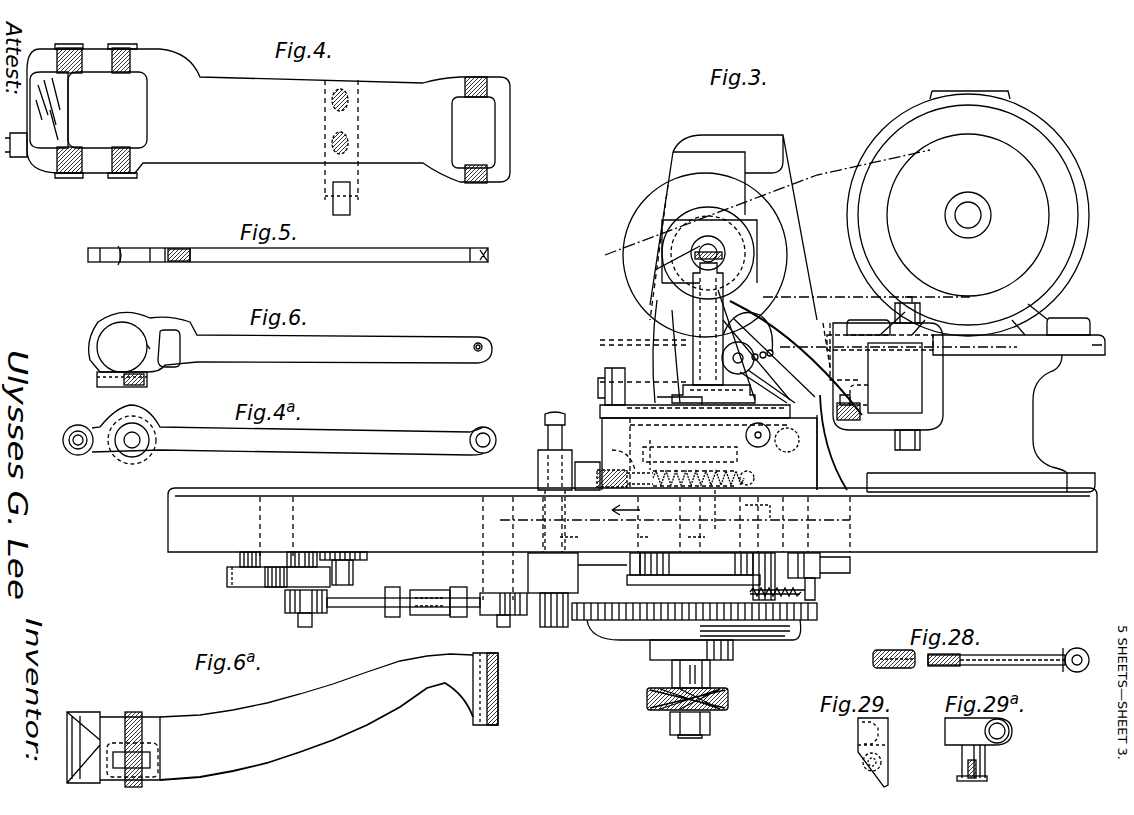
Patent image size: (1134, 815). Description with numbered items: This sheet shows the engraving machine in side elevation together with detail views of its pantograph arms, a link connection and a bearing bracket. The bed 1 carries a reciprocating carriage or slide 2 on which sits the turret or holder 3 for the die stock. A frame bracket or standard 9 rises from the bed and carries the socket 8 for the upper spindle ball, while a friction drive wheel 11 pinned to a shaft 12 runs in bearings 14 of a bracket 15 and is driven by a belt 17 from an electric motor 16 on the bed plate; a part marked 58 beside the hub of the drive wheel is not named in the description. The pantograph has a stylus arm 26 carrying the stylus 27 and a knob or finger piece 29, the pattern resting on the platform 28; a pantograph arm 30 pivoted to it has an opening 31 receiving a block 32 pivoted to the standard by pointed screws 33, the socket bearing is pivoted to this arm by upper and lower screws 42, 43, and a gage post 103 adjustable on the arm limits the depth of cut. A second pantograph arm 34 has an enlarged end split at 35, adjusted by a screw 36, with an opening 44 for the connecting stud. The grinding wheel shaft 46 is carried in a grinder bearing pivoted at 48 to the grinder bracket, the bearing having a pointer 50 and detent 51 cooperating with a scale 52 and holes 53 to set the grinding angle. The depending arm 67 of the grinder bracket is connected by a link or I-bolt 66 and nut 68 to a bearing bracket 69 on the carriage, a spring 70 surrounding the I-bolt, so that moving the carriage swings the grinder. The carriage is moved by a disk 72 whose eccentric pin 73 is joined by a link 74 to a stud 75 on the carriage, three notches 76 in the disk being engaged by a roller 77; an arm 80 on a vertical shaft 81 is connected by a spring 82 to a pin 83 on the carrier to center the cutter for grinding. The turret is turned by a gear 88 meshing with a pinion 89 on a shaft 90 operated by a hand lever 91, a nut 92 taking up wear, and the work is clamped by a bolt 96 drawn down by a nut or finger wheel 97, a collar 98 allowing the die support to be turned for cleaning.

In FIG. 3, the bed 1 is at (968, 540).
In FIG. 3, the carriage or slide 2 is at (583, 470).
In FIG. 3, the turret or holder 3 is at (651, 541).
In FIG. 3, the socket 8 is at (665, 195).
In FIG. 3, the frame bracket 9 is at (672, 165).
In FIG. 3, the friction drive wheel 11 is at (623, 256).
In FIG. 3, the shaft 12 is at (690, 240).
In FIG. 3, the bearings 14 is at (655, 270).
In FIG. 3, the bracket 15 is at (657, 326).
In FIG. 3, the electric motor 16 is at (1036, 135).
In FIG. 3, the belt 17 is at (815, 175).
In FIG. 4A, the stylus arm 26 is at (418, 438).
In FIG. 6A, the stylus arm 26 is at (282, 720).
In FIG. 3, the stylus arm 26 is at (790, 297).
In FIG. 3, the stylus 27 is at (696, 372).
In FIG. 3, the platform 28 is at (605, 420).
In FIG. 3, the knob or finger piece 29 is at (722, 256).
In FIG. 4, the pantograph arm 30 is at (268, 113).
In FIG. 3, the pantograph arm 30 is at (935, 390).
In FIG. 4, the opening 31 is at (76, 114).
In FIG. 3, the block 32 is at (640, 350).
In FIG. 3, the pointed screws 33 is at (604, 380).
In FIG. 5, the second pantograph arm 34 is at (288, 269).
In FIG. 6, the second pantograph arm 34 is at (385, 356).
In FIG. 5, the split 35 is at (119, 268).
In FIG. 6, the split 35 is at (122, 387).
In FIG. 5, the screw 36 is at (122, 247).
In FIG. 6, the screw 36 is at (97, 378).
In FIG. 4, the upper screw 42 is at (122, 68).
In FIG. 4, the lower screw 43 is at (132, 163).
In FIG. 6, the opening 44 is at (172, 342).
In FIG. 3, the shaft 46 is at (803, 455).
In FIG. 3, the pivot 48 is at (758, 448).
In FIG. 3, the pointer 50 is at (755, 337).
In FIG. 3, the detent 51 is at (757, 350).
In FIG. 3, the scale 52 is at (748, 300).
In FIG. 3, the holes 53 is at (767, 383).
In FIG. 3, the bearing 58 is at (724, 246).
In FIG. 28, the link or I-bolt 66 is at (1018, 664).
In FIG. 3, the link or I-bolt 66 is at (690, 488).
In FIG. 3, the depending arm 67 is at (690, 462).
In FIG. 28, the nut 68 is at (872, 662).
In FIG. 3, the nut 68 is at (625, 473).
In FIG. 29, the bearing bracket 69 is at (860, 760).
In FIG. 29A, the bearing bracket 69 is at (952, 748).
In FIG. 3, the bearing bracket 69 is at (619, 452).
In FIG. 3, the spring 70 is at (652, 456).
In FIG. 3, the disk 72 is at (252, 585).
In FIG. 3, the pin 73 is at (308, 618).
In FIG. 3, the link 74 is at (370, 614).
In FIG. 3, the stud or pin 75 is at (508, 620).
In FIG. 3, the notches 76 is at (227, 579).
In FIG. 3, the roller 77 is at (353, 574).
In FIG. 3, the arm 80 is at (851, 566).
In FIG. 3, the vertical shaft 81 is at (766, 508).
In FIG. 3, the spring 82 is at (798, 592).
In FIG. 3, the pin 83 is at (818, 613).
In FIG. 3, the gear 88 is at (628, 612).
In FIG. 3, the pinion 89 is at (560, 630).
In FIG. 3, the shaft 90 is at (582, 541).
In FIG. 3, the hand lever 91 is at (546, 430).
In FIG. 3, the nut 92 is at (735, 655).
In FIG. 3, the bolt 96 is at (708, 541).
In FIG. 3, the nut or finger wheel 97 is at (728, 704).
In FIG. 3, the collar 98 is at (706, 728).
In FIG. 4, the gage post or arm 103 is at (352, 178).